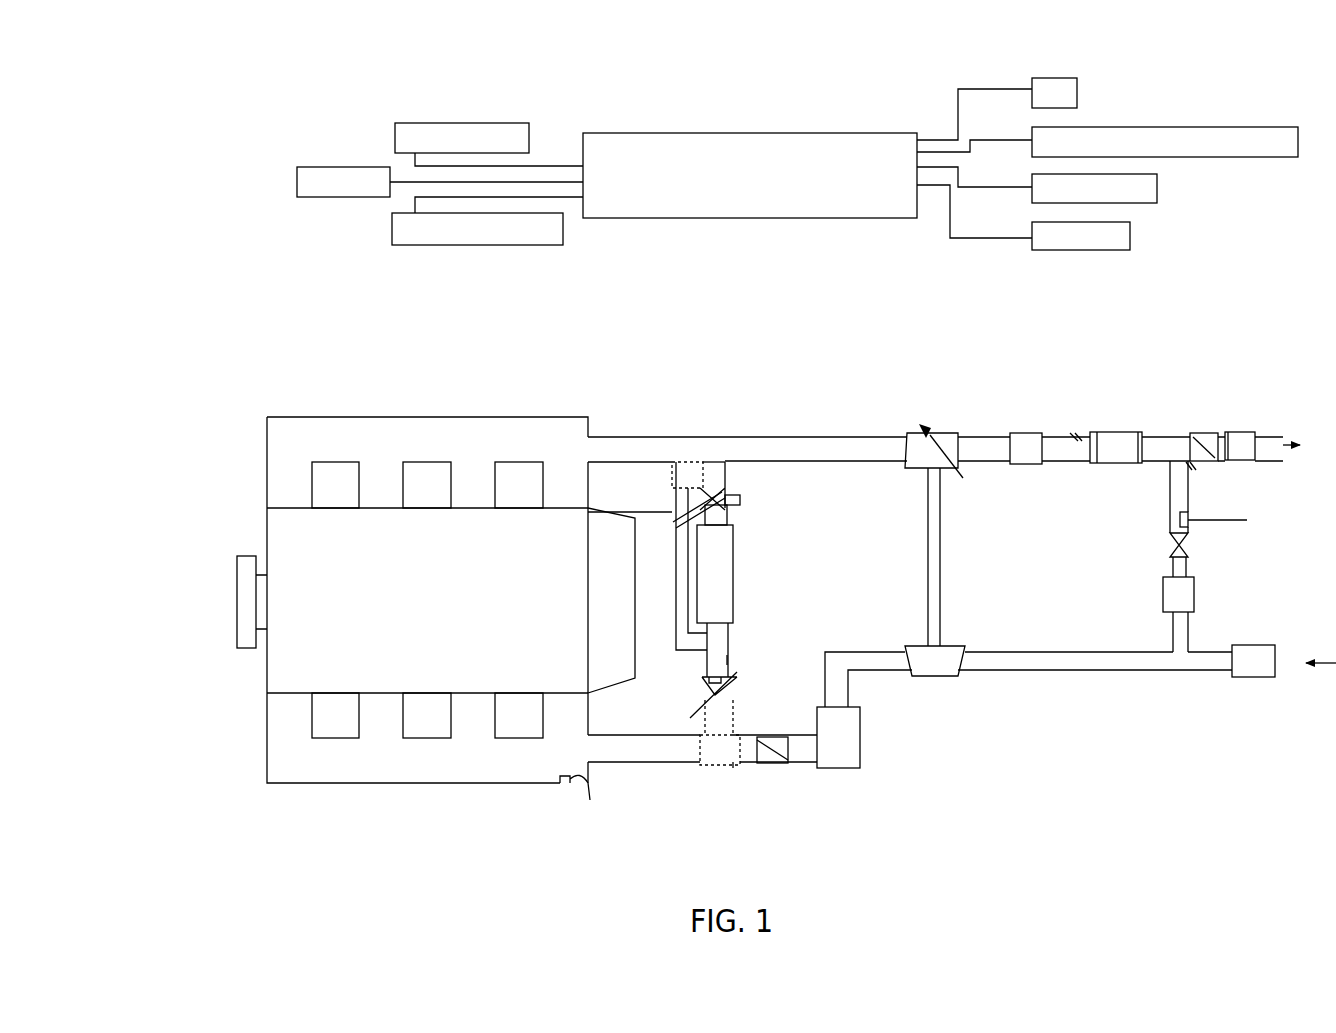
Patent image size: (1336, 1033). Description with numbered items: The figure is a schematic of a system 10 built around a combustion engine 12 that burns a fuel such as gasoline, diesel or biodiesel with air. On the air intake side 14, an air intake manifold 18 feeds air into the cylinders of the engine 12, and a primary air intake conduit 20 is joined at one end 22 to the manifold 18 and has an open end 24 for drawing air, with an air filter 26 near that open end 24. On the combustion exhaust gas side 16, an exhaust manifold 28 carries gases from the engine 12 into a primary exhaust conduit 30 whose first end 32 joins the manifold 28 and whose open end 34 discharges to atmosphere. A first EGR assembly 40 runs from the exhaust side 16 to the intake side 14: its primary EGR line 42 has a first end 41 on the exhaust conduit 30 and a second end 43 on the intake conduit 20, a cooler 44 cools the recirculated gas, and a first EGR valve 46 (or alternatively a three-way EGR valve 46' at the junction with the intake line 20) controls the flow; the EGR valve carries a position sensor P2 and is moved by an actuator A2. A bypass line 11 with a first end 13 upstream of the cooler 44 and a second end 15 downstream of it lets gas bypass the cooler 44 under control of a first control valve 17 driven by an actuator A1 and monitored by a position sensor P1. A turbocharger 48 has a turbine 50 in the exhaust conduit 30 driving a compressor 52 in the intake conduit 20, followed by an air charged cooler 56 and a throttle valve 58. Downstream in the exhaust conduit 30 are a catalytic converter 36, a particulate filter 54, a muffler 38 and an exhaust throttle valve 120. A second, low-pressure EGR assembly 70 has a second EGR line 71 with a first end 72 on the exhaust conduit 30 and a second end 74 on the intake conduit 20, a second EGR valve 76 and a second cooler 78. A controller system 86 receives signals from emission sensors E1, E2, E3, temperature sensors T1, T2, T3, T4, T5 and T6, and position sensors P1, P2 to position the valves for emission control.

The system 10 is at (192, 614).
The bypass line 11 is at (676, 575).
The combustion engine 12 is at (320, 640).
The first end of bypass line 13 is at (668, 514).
The air intake side 14 is at (220, 747).
The second end of bypass line 15 is at (700, 652).
The combustion exhaust gas side 16 is at (240, 430).
The first control valve 17 is at (675, 528).
The air intake manifold 18 is at (375, 757).
The primary air intake conduit 20 is at (683, 766).
The one end of air intake conduit 22 is at (596, 733).
The open end of air intake conduit 24 is at (1283, 656).
The air filter 26 is at (1255, 680).
The exhaust manifold 28 is at (400, 432).
The primary exhaust conduit 30 is at (742, 435).
The first end of exhaust conduit 32 is at (594, 433).
The open end of exhaust conduit 34 is at (1290, 442).
The catalytic converter 36 is at (1030, 433).
The muffler 38 is at (1235, 432).
The first exhaust gas re-circulation assembly 40 is at (745, 508).
The first end of primary EGR line 41 is at (729, 465).
The primary EGR line 42 is at (733, 520).
The second end of primary EGR line 43 is at (736, 727).
The cooler 44 is at (735, 590).
The first EGR valve 46 is at (687, 670).
The three-way EGR valve 46' is at (722, 778).
The turbocharger 48 is at (920, 533).
The turbine 50 is at (918, 440).
The compressor 52 is at (920, 650).
The particulate filter 54 is at (1115, 432).
The air charged cooler 56 is at (860, 730).
The throttle valve 58 is at (775, 765).
The second EGR assembly 70 is at (1166, 516).
The second EGR line 71 is at (1190, 493).
The first end of second EGR line 72 is at (1192, 465).
The second end of second EGR line 74 is at (1198, 644).
The second EGR valve 76 is at (1190, 545).
The second cooler 78 is at (1195, 598).
The controller system 86 is at (757, 218).
The throttle valve 120 is at (1200, 433).
The position sensor P1 is at (677, 478).
The position sensor P2 is at (737, 675).
The temperature sensor T1 is at (688, 512).
The temperature sensor T2 is at (731, 660).
The temperature sensor T3 is at (735, 768).
The temperature sensor T4 is at (586, 803).
The temperature sensor T5 is at (1228, 524).
The temperature sensor T6 is at (722, 610).
The NOx or oxygen sensor E1 is at (1075, 437).
The sensor E2 is at (1100, 437).
The NOx, particulate matter, or oxygen sensor E3 is at (1157, 437).
The actuator A1 is at (745, 498).
The actuator A2 is at (740, 692).